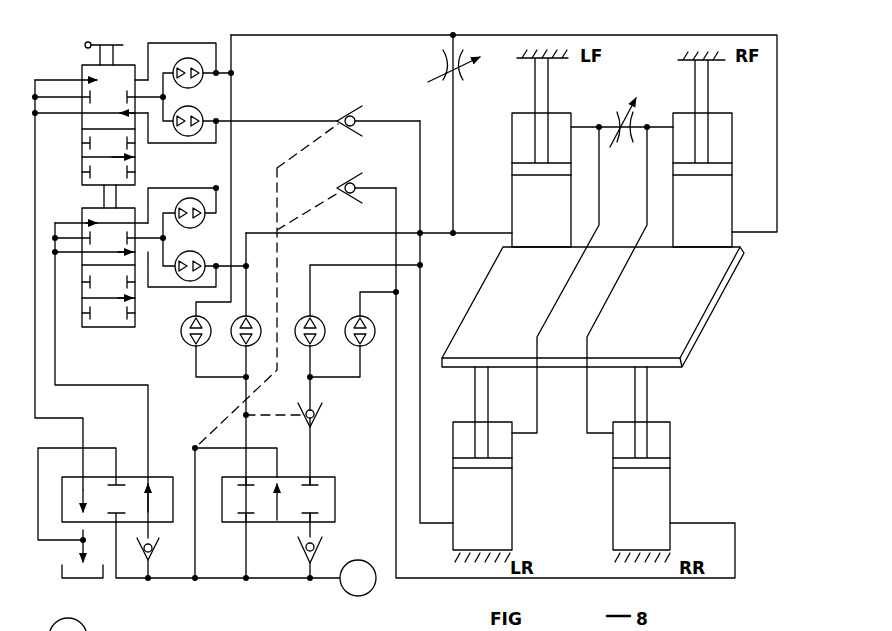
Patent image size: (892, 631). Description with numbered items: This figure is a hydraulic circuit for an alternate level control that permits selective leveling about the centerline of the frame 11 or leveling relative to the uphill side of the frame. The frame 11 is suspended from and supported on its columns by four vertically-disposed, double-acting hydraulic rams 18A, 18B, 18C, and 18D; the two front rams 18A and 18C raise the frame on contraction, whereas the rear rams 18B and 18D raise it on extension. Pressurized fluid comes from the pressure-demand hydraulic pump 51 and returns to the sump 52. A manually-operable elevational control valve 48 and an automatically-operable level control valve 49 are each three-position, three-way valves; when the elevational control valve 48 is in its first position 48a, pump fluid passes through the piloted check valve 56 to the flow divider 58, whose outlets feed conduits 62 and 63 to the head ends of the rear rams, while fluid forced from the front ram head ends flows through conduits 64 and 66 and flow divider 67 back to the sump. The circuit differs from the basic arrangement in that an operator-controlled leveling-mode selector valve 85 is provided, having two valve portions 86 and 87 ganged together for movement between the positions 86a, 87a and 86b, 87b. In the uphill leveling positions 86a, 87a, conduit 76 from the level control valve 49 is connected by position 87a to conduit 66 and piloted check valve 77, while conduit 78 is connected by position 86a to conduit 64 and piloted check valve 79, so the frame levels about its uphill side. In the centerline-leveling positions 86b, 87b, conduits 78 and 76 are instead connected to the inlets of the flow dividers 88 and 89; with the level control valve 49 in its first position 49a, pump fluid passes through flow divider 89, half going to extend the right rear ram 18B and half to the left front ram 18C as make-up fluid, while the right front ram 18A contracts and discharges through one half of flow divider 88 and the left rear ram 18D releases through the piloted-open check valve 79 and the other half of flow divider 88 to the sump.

The frame 11 is at (708, 318).
The right front hydraulic ram 18A is at (738, 162).
The right rear hydraulic ram 18B is at (677, 448).
The left front hydraulic ram 18C is at (502, 160).
The left rear hydraulic ram 18D is at (448, 445).
The elevational control valve 48 is at (338, 476).
The first position of elevational control valve 48a is at (327, 500).
The level control valve 49 is at (132, 472).
The first position of level control valve 49a is at (165, 482).
The hydraulic pump 51 is at (362, 596).
The sump 52 is at (212, 626).
The piloted check valve 56 is at (323, 414).
The flow divider 58 is at (350, 370).
The conduit 62 is at (392, 415).
The conduit 63 is at (405, 322).
The conduit 64 is at (375, 40).
The conduit 66 is at (365, 235).
The flow divider 67 is at (232, 371).
The conduit 76 is at (117, 388).
The piloted check valve 77 is at (360, 178).
The conduit 78 is at (50, 415).
The piloted check valve 79 is at (347, 110).
The leveling-mode selector valve 85 is at (78, 72).
The first valve portion of selector valve 86 is at (78, 138).
The uphill leveling position of valve portion 86 86a is at (135, 120).
The centerline leveling position of valve portion 86 86b is at (137, 178).
The second valve portion of selector valve 87 is at (75, 213).
The uphill leveling position of valve portion 87 87a is at (128, 262).
The centerline leveling position of valve portion 87 87b is at (130, 323).
The flow divider 88 is at (228, 107).
The flow divider 89 is at (228, 249).